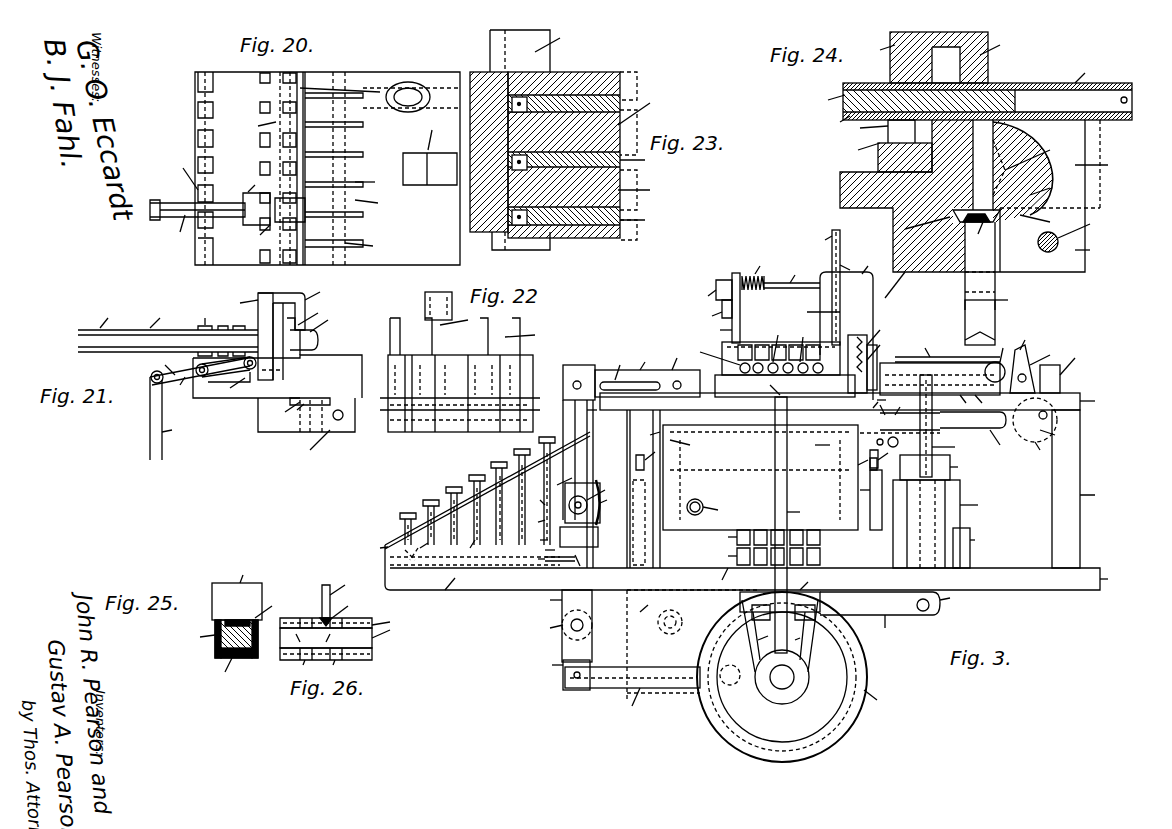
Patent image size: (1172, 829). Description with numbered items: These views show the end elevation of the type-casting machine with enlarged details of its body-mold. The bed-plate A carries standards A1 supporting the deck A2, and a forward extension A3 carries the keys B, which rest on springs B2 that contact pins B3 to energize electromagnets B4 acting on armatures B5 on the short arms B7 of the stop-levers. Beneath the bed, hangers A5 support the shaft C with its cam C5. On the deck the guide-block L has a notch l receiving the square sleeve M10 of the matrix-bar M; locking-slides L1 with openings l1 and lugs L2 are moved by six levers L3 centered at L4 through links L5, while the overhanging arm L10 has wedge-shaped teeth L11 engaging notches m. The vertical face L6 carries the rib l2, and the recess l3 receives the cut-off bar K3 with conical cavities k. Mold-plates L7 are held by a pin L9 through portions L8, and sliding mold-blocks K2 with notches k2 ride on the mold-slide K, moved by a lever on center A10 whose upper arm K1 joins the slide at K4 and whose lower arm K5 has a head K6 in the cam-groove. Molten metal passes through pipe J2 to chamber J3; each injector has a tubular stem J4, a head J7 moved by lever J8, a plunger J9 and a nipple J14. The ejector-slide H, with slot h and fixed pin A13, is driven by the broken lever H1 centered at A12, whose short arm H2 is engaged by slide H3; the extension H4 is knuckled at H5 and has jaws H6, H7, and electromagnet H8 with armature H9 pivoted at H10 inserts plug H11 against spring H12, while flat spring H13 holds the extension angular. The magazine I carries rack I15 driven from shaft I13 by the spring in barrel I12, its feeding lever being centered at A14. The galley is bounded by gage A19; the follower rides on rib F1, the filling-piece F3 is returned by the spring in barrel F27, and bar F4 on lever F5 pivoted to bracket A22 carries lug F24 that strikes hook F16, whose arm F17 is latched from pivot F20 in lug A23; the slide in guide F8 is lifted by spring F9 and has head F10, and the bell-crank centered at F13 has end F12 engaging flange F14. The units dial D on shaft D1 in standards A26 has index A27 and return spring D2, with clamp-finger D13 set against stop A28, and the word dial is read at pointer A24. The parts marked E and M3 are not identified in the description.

In FIG. 3, the bed-plate A is at (752, 567).
In FIG. 3, the standards A1 is at (868, 489).
In FIG. 3, the deck plate A2 is at (856, 400).
In FIG. 3, the forward extension of the bed A3 is at (443, 592).
In FIG. 3, the hanger A5 is at (806, 636).
In FIG. 3, the lever center A10 is at (846, 440).
In FIG. 3, the lever center A12 is at (559, 625).
In FIG. 3, the fixed pin A13 is at (672, 357).
In FIG. 3, the lever center A14 is at (872, 405).
In FIG. 3, the long gage A19 is at (672, 435).
In FIG. 3, the bracket A22 is at (693, 645).
In FIG. 3, the lug A23 is at (1068, 368).
In FIG. 3, the fixed index or pointer A24 is at (849, 326).
In FIG. 3, the standards A26 is at (719, 308).
In FIG. 3, the open index A27 is at (815, 236).
In FIG. 3, the fixed stop A28 is at (713, 310).
In FIG. 3, the keys B is at (467, 491).
In FIG. 3, the key springs B2 is at (422, 546).
In FIG. 3, the contact pins B3 is at (475, 498).
In FIG. 3, the electromagnets B4 is at (862, 500).
In FIG. 3, the armatures B5 is at (886, 456).
In FIG. 3, the short arms of stop-levers B7 is at (755, 501).
In FIG. 3, the shaft C is at (782, 677).
In FIG. 3, the cam C5 is at (794, 677).
In FIG. 3, the units dial D is at (846, 287).
In FIG. 3, the dial-shaft D1 is at (792, 275).
In FIG. 3, the dial return spring D2 is at (756, 270).
In FIG. 3, the clamp-finger D13 is at (711, 291).
In FIG. 3, the lever E is at (943, 426).
In FIG. 3, the follower rib F1 is at (940, 388).
In FIG. 3, the filling-piece F3 is at (995, 357).
In FIG. 3, the vertically-moving bar F4 is at (892, 602).
In FIG. 3, the horizontal lever F5 is at (884, 629).
In FIG. 3, the slide guide F8 is at (943, 524).
In FIG. 3, the slide spring F9 is at (970, 548).
In FIG. 3, the slide head F10 is at (900, 419).
In FIG. 3, the bell-crank arm F12 is at (904, 403).
In FIG. 3, the bell-crank center F13 is at (939, 467).
In FIG. 3, the hooked flange F14 is at (947, 348).
In FIG. 3, the hook F16 is at (755, 636).
In FIG. 3, the arm F17 is at (973, 400).
In FIG. 3, the latch pivot F20 is at (1024, 359).
In FIG. 3, the beveled lug F24 is at (1044, 453).
In FIG. 3, the spring barrel F27 is at (1043, 420).
In FIG. 3, the ejector-slide H is at (631, 375).
In FIG. 3, the slot h is at (630, 370).
In FIG. 3, the broken lever H1 is at (561, 626).
In FIG. 3, the short lower arm H2 is at (555, 601).
In FIG. 3, the slide H3 is at (632, 695).
In FIG. 3, the extension portion H4 is at (588, 483).
In FIG. 3, the knuckle joint H5 is at (593, 499).
In FIG. 3, the stop-jaw H6 is at (553, 479).
In FIG. 3, the lower jaw H7 is at (535, 538).
In FIG. 3, the electromagnet H8 is at (579, 537).
In FIG. 3, the armature H9 is at (538, 548).
In FIG. 3, the armature pivot H10 is at (546, 557).
In FIG. 3, the plug H11 is at (532, 496).
In FIG. 3, the spring H12 is at (564, 571).
In FIG. 3, the flat spring H13 is at (612, 502).
In FIG. 3, the sliding magazine I is at (878, 375).
In FIG. 3, the hub or barrel I12 is at (882, 345).
In FIG. 3, the short shaft I13 is at (831, 327).
In FIG. 3, the rack I15 is at (873, 355).
In FIG. 3, the pipe J2 is at (708, 508).
In FIG. 3, the chamber J3 is at (760, 477).
In FIG. 24, the tubular stem portion J4 is at (991, 215).
In FIG. 3, the tubular stem portion J4 is at (980, 322).
In FIG. 3, the stem head J7 is at (764, 556).
In FIG. 3, the horizontal lever J8 is at (720, 580).
In FIG. 3, the plunger J9 is at (764, 536).
In FIG. 24, the conical nipple J14 is at (976, 229).
In FIG. 20, the mold-slide K is at (382, 168).
In FIG. 3, the mold-slide K is at (771, 368).
In FIG. 24, the conical cavities k is at (962, 214).
In FIG. 3, the upper lever arm K1 is at (782, 396).
In FIG. 20, the sliding mold-blocks K2 is at (370, 220).
In FIG. 23, the sliding mold-blocks K2 is at (570, 156).
In FIG. 23, the cut-off bar K3 is at (534, 137).
In FIG. 24, the cut-off bar K3 is at (907, 227).
In FIG. 21, the cut-off bar K3 is at (318, 394).
In FIG. 20, the pivot connection K4 is at (432, 138).
In FIG. 3, the lower lever arm K5 is at (795, 525).
In FIG. 3, the head K6 is at (781, 594).
In FIG. 24, the notches k2 is at (1030, 167).
In FIG. 20, the guide-block L is at (327, 168).
In FIG. 21, the guide-block L is at (277, 393).
In FIG. 3, the guide-block L is at (838, 387).
In FIG. 20, the rectangular notch l is at (260, 125).
In FIG. 24, the rectangular notch l is at (887, 156).
In FIG. 22, the rectangular notch l is at (461, 375).
In FIG. 20, the locking-slides L1 is at (272, 219).
In FIG. 24, the locking-slides L1 is at (923, 56).
In FIG. 21, the locking-slides L1 is at (255, 336).
In FIG. 24, the rectangular opening l1 is at (885, 130).
In FIG. 22, the rectangular opening l1 is at (451, 311).
In FIG. 20, the lugs L2 is at (254, 201).
In FIG. 21, the lugs L2 is at (229, 385).
In FIG. 24, the transverse rib l2 is at (1030, 168).
In FIG. 20, the levers L3 is at (197, 221).
In FIG. 21, the levers L3 is at (192, 370).
In FIG. 24, the recess l3 is at (1041, 220).
In FIG. 21, the recess l3 is at (286, 415).
In FIG. 20, the lever center L4 is at (181, 173).
In FIG. 21, the lever center L4 is at (210, 377).
In FIG. 21, the link L5 is at (167, 415).
In FIG. 20, the vertical face L6 is at (346, 109).
In FIG. 24, the vertical face L6 is at (1049, 186).
In FIG. 21, the vertical face L6 is at (299, 405).
In FIG. 20, the mold-plates L7 is at (373, 178).
In FIG. 23, the mold-plates L7 is at (640, 187).
In FIG. 24, the mold-plates L7 is at (1062, 164).
In FIG. 24, the downwardly-projecting portions L8 is at (1090, 247).
In FIG. 24, the pin L9 is at (1072, 233).
In FIG. 24, the overhanging arm L10 is at (977, 59).
In FIG. 21, the overhanging arm L10 is at (299, 304).
In FIG. 25, the overhanging arm L10 is at (237, 592).
In FIG. 26, the overhanging arm L10 is at (343, 592).
In FIG. 3, the overhanging arm L10 is at (809, 341).
In FIG. 21, the wedge-shaped teeth L11 is at (310, 315).
In FIG. 25, the wedge-shaped teeth L11 is at (256, 610).
In FIG. 26, the wedge-shaped teeth L11 is at (341, 610).
In FIG. 24, the matrix-bar M is at (969, 101).
In FIG. 21, the matrix-bar M is at (168, 329).
In FIG. 25, the matrix-bar M is at (235, 667).
In FIG. 26, the matrix-bar M is at (340, 643).
In FIG. 21, the V-shaped notches m is at (221, 330).
In FIG. 26, the V-shaped notches m is at (318, 667).
In FIG. 24, the sleeve M3 is at (827, 124).
In FIG. 21, the sleeve M3 is at (103, 316).
In FIG. 25, the sleeve M3 is at (214, 639).
In FIG. 26, the sleeve M3 is at (343, 637).
In FIG. 24, the square sleeve M10 is at (1071, 84).
In FIG. 21, the square sleeve M10 is at (321, 328).
In FIG. 3, the square sleeve M10 is at (781, 346).